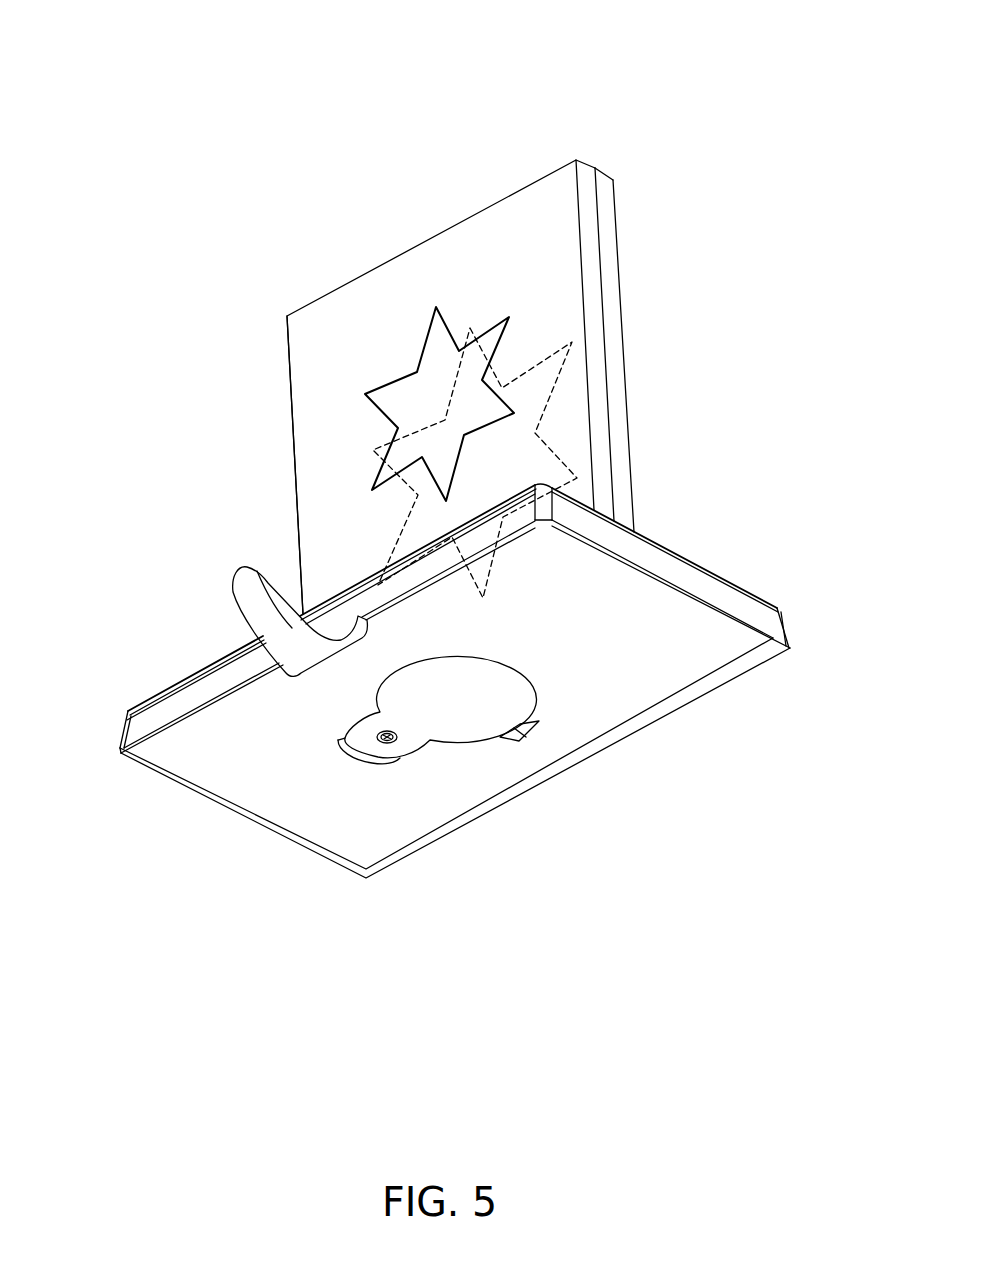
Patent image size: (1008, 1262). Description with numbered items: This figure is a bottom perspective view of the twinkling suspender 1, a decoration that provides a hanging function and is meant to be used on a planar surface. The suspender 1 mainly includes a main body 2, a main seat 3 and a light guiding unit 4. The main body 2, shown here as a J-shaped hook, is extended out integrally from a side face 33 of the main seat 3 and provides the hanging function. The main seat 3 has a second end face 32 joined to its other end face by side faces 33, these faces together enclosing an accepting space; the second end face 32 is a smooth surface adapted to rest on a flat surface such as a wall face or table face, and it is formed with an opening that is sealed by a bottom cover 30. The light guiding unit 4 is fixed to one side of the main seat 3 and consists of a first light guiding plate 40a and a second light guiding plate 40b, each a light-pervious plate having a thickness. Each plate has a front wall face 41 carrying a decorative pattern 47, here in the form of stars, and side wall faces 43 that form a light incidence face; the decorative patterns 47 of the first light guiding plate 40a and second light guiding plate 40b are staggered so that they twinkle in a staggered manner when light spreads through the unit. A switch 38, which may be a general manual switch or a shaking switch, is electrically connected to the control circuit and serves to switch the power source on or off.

The twinkling suspender 1 is at (203, 72).
The main body 2 is at (245, 568).
The main seat 3 is at (717, 573).
The light guiding unit 4 is at (352, 237).
The bottom cover 30 is at (676, 688).
The second end face 32 is at (773, 637).
The side face 33 is at (180, 695).
The switch 38 is at (514, 742).
The first light guiding plate 40a is at (305, 342).
The second light guiding plate 40b is at (612, 200).
The front wall face 41 is at (298, 420).
The side wall face 43 is at (597, 378).
The decorative pattern 47 is at (490, 350).